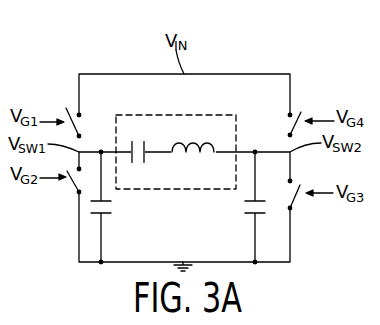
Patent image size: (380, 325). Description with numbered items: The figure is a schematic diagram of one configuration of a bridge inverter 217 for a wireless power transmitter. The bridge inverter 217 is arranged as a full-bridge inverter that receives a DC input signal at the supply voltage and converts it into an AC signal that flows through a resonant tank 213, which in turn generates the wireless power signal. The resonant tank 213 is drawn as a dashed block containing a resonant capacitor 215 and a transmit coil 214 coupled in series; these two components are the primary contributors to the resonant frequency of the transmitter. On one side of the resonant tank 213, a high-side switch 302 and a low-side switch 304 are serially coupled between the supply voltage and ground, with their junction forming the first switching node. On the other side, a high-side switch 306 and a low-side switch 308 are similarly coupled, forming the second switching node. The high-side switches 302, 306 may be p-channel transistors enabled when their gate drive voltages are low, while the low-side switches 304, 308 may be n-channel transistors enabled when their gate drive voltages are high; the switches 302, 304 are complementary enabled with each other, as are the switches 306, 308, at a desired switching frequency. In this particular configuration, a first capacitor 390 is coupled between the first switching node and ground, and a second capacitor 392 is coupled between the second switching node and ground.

The bridge inverter 217 is at (302, 62).
The high-side switch 302 is at (68, 110).
The low-side switch 304 is at (73, 187).
The high-side switch 306 is at (288, 125).
The low-side switch 308 is at (297, 203).
The first capacitor 390 is at (107, 216).
The second capacitor 392 is at (251, 214).
The resonant tank 213 is at (176, 195).
The transmit coil 214 is at (178, 146).
The resonant capacitor 215 is at (146, 158).